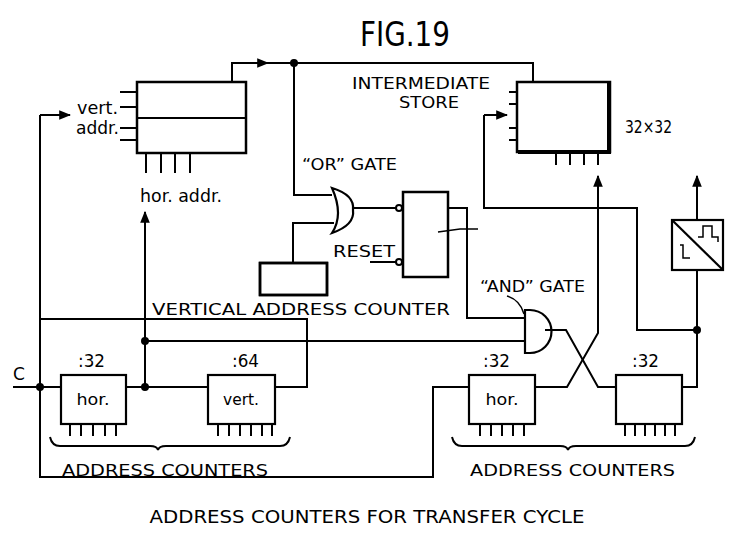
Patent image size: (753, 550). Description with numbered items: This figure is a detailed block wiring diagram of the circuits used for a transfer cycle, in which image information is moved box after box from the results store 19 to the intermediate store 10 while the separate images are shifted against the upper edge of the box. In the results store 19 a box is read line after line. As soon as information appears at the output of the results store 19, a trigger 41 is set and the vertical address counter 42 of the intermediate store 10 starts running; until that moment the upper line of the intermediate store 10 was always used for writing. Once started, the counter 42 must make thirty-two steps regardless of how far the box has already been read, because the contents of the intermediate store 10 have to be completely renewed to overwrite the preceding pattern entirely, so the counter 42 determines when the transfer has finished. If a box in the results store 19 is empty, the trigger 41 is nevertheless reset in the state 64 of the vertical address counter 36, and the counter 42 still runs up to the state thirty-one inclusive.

The results store 19 is at (187, 82).
The intermediate store 10 is at (574, 92).
The trigger 41 is at (426, 203).
The vertical address counter 36 is at (274, 276).
The state 64 of the vertical address counter 64 is at (276, 261).
The vertical address counter of the intermediate store 42 is at (617, 401).